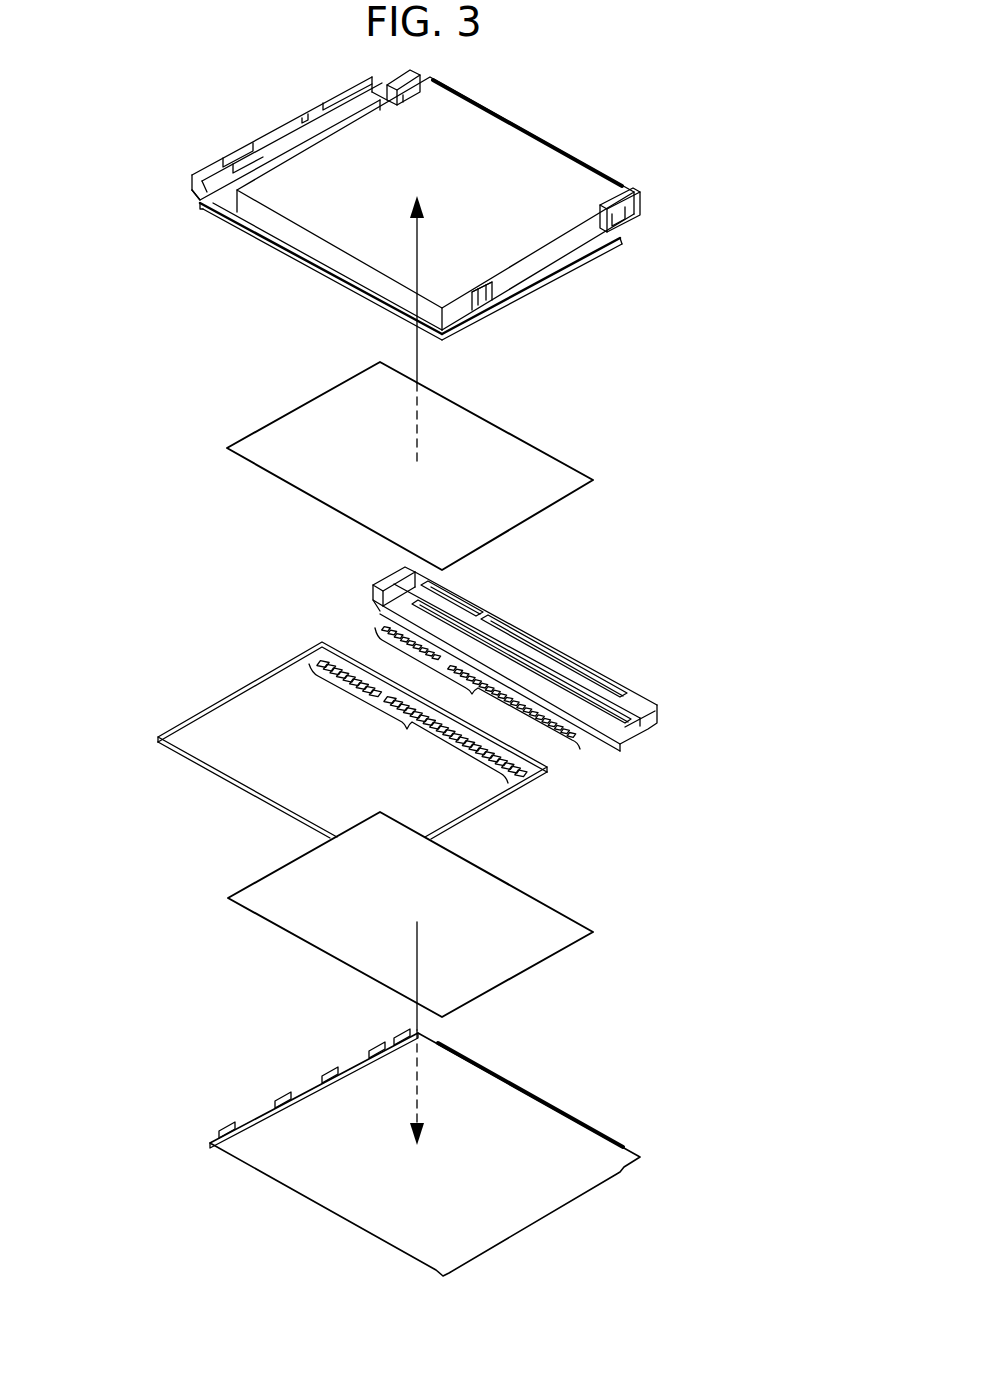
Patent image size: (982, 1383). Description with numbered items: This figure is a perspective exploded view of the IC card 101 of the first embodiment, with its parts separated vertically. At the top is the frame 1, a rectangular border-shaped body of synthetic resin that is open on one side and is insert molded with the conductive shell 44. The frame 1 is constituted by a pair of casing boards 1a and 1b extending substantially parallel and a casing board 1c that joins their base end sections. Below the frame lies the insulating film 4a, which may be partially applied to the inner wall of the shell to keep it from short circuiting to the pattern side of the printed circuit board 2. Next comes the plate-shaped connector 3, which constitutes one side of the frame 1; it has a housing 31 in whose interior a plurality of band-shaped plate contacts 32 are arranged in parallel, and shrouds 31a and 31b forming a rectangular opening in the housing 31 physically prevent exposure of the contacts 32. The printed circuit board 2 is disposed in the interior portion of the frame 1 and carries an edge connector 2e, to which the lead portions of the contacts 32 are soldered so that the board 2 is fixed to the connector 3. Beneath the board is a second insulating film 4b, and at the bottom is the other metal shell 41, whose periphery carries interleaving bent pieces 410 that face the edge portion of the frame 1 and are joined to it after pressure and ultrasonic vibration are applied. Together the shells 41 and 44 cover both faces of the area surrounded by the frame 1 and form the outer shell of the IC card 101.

The IC card 101 is at (85, 522).
The frame 1 is at (338, 302).
The casing board 1a is at (282, 123).
The casing board 1b is at (548, 280).
The casing board 1c is at (282, 253).
The shell 44 is at (540, 132).
The insulating film 4a is at (518, 438).
The connector 3 is at (357, 577).
The housing 31 is at (655, 707).
The shroud 31a is at (593, 672).
The shroud 31b is at (492, 622).
The contacts 32 is at (477, 688).
The printed circuit board 2 is at (250, 682).
The edge connector 2e is at (418, 722).
The insulating film 4b is at (548, 905).
The shell 41 is at (372, 1222).
The bent pieces 410 is at (212, 1133).